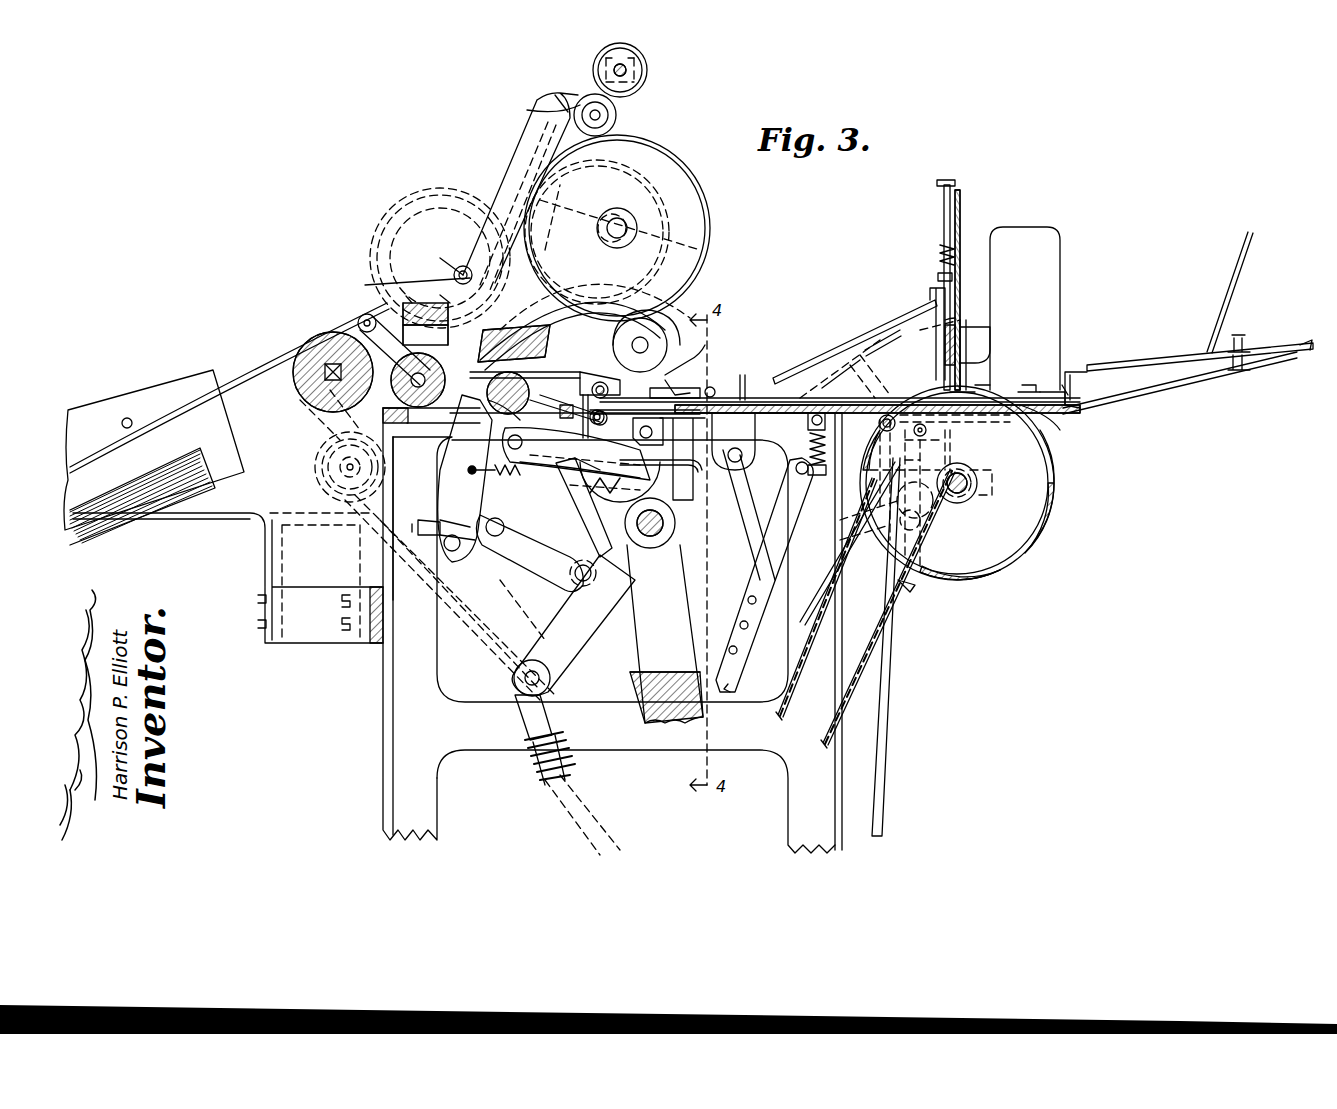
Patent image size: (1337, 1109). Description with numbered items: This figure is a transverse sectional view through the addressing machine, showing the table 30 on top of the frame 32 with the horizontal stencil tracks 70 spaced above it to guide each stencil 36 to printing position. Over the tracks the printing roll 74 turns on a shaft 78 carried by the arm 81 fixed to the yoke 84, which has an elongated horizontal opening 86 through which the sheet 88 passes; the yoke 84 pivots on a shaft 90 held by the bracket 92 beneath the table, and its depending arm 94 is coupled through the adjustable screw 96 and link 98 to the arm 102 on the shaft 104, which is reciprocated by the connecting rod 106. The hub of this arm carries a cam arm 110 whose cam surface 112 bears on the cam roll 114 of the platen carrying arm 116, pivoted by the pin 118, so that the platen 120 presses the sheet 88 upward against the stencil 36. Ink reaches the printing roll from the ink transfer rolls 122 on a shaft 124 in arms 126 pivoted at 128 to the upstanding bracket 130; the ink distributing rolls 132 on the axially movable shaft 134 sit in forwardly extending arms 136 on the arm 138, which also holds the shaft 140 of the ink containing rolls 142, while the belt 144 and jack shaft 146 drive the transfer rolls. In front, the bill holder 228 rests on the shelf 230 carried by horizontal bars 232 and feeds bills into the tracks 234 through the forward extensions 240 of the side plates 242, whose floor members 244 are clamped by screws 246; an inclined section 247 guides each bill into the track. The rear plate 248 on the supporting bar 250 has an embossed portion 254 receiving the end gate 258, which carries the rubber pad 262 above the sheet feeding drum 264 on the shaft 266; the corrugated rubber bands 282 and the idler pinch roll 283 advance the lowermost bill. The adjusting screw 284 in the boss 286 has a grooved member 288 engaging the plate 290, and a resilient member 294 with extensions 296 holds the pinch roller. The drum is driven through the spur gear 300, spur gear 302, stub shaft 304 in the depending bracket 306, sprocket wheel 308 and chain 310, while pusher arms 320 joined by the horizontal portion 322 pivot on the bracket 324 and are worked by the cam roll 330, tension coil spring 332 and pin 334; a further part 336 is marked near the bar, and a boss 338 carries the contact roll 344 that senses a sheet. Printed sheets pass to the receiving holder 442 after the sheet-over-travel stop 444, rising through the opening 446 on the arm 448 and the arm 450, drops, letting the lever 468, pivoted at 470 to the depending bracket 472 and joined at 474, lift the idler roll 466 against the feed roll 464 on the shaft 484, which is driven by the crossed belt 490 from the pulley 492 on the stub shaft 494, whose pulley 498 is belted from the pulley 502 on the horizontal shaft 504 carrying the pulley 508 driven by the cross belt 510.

The table 30 is at (396, 452).
The frame 32 is at (405, 672).
The stencil 36 is at (660, 392).
The stencil tracks 70 is at (636, 352).
The printing roll 74 is at (662, 360).
The shaft 78 is at (649, 348).
The arm 81 is at (610, 290).
The yoke 84 is at (530, 338).
The elongated horizontal opening 86 is at (540, 372).
The sheet 88 is at (170, 470).
The shaft 90 is at (494, 423).
The bracket 92 is at (584, 507).
The depending arm 94 is at (465, 478).
The adjustable screw 96 is at (420, 537).
The link 98 is at (538, 555).
The arm 102 is at (585, 628).
The shaft 104 is at (655, 560).
The connecting rod 106 is at (545, 783).
The cam arm 110 is at (612, 520).
The cam surface 112 is at (580, 467).
The cam roll 114 is at (635, 431).
The platen carrying arm 116 is at (576, 454).
The pin 118 is at (491, 461).
The platen 120 is at (835, 403).
The ink transfer rolls 122 is at (706, 215).
The shaft 124 is at (620, 224).
The arms 126 is at (580, 225).
The pivot 128 is at (458, 268).
The upstanding bracket 130 is at (448, 312).
The ink distributing rolls 132 is at (617, 113).
The shaft 134 is at (578, 100).
The forwardly extending arms 136 is at (555, 110).
The arm 138 is at (520, 145).
The shaft 140 is at (630, 68).
The ink containing rolls 142 is at (638, 50).
The belt 144 is at (528, 160).
The jack shaft 146 is at (452, 273).
The bill holder 228 is at (1175, 343).
The shelf 230 is at (1048, 408).
The horizontal bars 232 is at (1045, 420).
The tracks 234 is at (743, 385).
The forward extensions 240 is at (975, 345).
The plates 242 is at (1045, 275).
The floor members 244 is at (1058, 365).
The clamping screws 246 is at (1028, 385).
The upwardly inclined section 247 is at (880, 372).
The rear plate 248 is at (960, 215).
The supporting bar 250 is at (968, 340).
The embossed portion 254 is at (955, 318).
The end gate 258 is at (958, 328).
The rubber pad 262 is at (940, 414).
The sheet feeding drum 264 is at (1012, 566).
The shaft 266 is at (972, 478).
The corrugated rubber bands 282 is at (1055, 508).
The idler pinch roll 283 is at (858, 345).
The adjusting screw 284 is at (944, 217).
The boss 286 is at (940, 251).
The grooved member 288 is at (938, 277).
The plate 290 is at (930, 292).
The resilient member 294 is at (972, 380).
The extensions 296 is at (958, 392).
The spur gear 300 is at (975, 495).
The spur gear 302 is at (870, 490).
The stub shaft 304 is at (870, 505).
The depending bracket 306 is at (961, 445).
The sprocket wheel 308 is at (870, 520).
The chain 310 is at (886, 635).
The arms 320 is at (910, 588).
The horizontal portion 322 is at (895, 595).
The bracket 324 is at (870, 545).
The cam roll 330 is at (880, 430).
The tension coil spring 332 is at (966, 449).
The pin 334 is at (1050, 430).
The link 336 is at (838, 374).
The boss 338 is at (895, 340).
The contact roll 344 is at (850, 330).
The receiving holder 442 is at (118, 400).
The sheet-over-travel stop 444 is at (600, 372).
The opening 446 is at (585, 449).
The arm 448 is at (560, 503).
The arm 450 is at (775, 520).
The feed roll 464 is at (602, 384).
The idler roll 466 is at (575, 408).
The lever 468 is at (740, 455).
The pivot 470 is at (805, 425).
The depending bracket 472 is at (722, 433).
The pivot 474 is at (806, 454).
The shaft 484 is at (680, 388).
The crossed belt 490 is at (660, 262).
The pulley 492 is at (410, 218).
The stub shaft 494 is at (395, 283).
The pulley 498 is at (395, 237).
The pulley 502 is at (322, 485).
The horizontal shaft 504 is at (345, 485).
The pulley 508 is at (315, 468).
The cross belt 510 is at (490, 640).